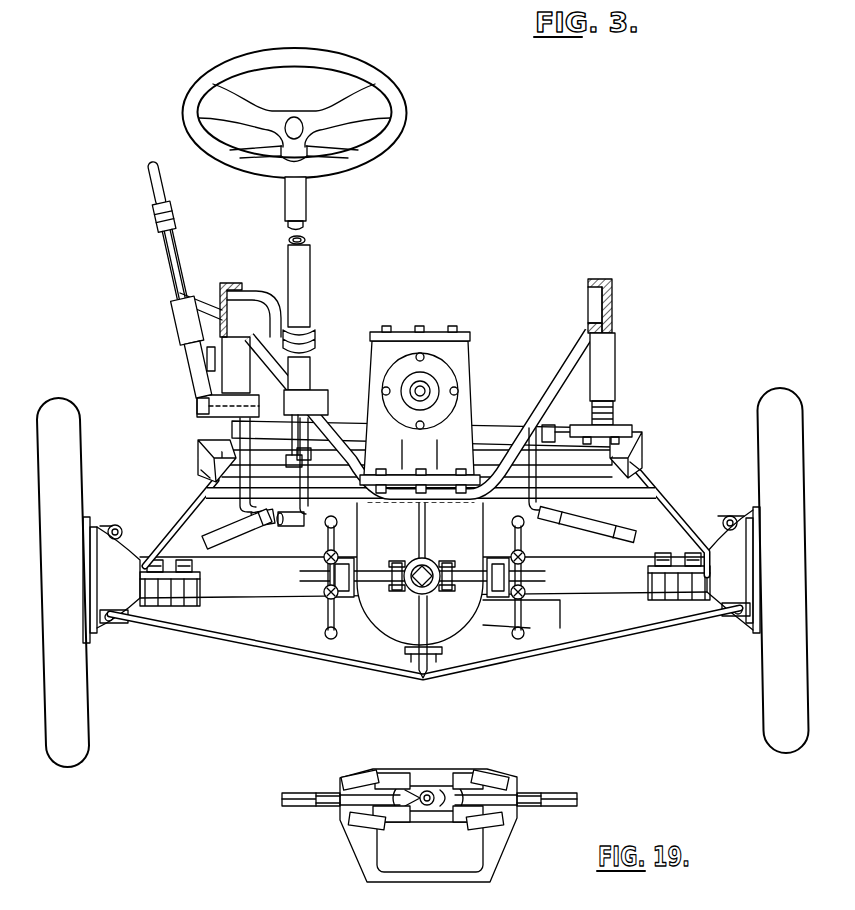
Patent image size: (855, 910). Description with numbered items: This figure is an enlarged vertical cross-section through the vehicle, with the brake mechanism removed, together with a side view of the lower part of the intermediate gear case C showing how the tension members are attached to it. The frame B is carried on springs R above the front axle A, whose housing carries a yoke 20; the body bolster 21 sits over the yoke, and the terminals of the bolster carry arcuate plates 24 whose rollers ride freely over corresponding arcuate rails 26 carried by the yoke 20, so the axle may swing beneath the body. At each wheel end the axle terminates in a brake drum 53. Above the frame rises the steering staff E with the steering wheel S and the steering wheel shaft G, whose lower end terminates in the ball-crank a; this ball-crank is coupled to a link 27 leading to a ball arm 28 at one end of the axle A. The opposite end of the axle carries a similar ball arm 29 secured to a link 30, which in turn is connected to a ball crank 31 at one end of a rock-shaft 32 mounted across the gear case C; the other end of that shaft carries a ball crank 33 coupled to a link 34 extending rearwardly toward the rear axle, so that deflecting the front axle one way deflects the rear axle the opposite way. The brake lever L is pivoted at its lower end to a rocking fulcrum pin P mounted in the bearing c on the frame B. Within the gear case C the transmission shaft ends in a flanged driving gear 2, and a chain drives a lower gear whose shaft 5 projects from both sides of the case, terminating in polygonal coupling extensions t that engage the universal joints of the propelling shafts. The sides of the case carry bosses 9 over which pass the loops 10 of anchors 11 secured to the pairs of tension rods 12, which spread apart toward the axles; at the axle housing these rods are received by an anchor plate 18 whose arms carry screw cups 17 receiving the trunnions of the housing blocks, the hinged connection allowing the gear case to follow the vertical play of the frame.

In FIG. 3, the steering wheel S is at (406, 107).
In FIG. 3, the brake lever L is at (148, 177).
In FIG. 3, the steering staff E is at (312, 217).
In FIG. 3, the steering wheel shaft G is at (305, 236).
In FIG. 3, the frame B is at (612, 288).
In FIG. 3, the spring R is at (607, 382).
In FIG. 3, the plate e is at (620, 428).
In FIG. 3, the rock-shaft 32 is at (552, 422).
In FIG. 3, the body bolster 21 is at (600, 440).
In FIG. 3, the arcuate plate 24 is at (198, 447).
In FIG. 3, the arcuate rail 26 is at (198, 466).
In FIG. 3, the yoke 20 is at (665, 503).
In FIG. 3, the ball crank 31 is at (530, 478).
In FIG. 3, the link 30 is at (600, 528).
In FIG. 3, the ball arm 29 is at (640, 545).
In FIG. 3, the ball arm 28 is at (205, 575).
In FIG. 3, the link 27 is at (250, 530).
In FIG. 3, the link 34 is at (288, 528).
In FIG. 3, the ball crank 33 is at (312, 500).
In FIG. 3, the ball-crank a is at (238, 502).
In FIG. 3, the rocking fulcrum pin P is at (205, 380).
In FIG. 3, the bearing c is at (215, 404).
In FIG. 3, the front axle A is at (633, 582).
In FIG. 3, the flanged driving gear 2 is at (598, 645).
In FIG. 3, the brake drum 53 is at (757, 630).
In FIG. 3, the intermediate gear case C is at (390, 625).
In FIG. 19, the intermediate gear case C is at (472, 858).
In FIG. 3, the shaft 5 is at (430, 568).
In FIG. 19, the shaft 5 is at (322, 793).
In FIG. 3, the coupling extension t is at (430, 584).
In FIG. 19, the coupling extension t is at (290, 793).
In FIG. 3, the loop 10 is at (325, 576).
In FIG. 19, the loop 10 is at (430, 790).
In FIG. 3, the tension rod 12 is at (325, 596).
In FIG. 19, the tension rod 12 is at (350, 776).
In FIG. 3, the anchor 11 is at (535, 594).
In FIG. 19, the anchor 11 is at (392, 773).
In FIG. 3, the boss 9 is at (540, 566).
In FIG. 19, the boss 9 is at (428, 806).
In FIG. 3, the screw cup 17 is at (445, 652).
In FIG. 3, the anchor plate 18 is at (490, 625).